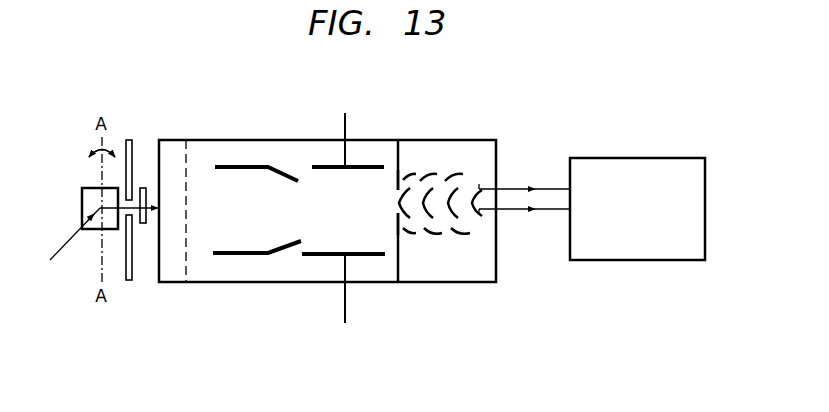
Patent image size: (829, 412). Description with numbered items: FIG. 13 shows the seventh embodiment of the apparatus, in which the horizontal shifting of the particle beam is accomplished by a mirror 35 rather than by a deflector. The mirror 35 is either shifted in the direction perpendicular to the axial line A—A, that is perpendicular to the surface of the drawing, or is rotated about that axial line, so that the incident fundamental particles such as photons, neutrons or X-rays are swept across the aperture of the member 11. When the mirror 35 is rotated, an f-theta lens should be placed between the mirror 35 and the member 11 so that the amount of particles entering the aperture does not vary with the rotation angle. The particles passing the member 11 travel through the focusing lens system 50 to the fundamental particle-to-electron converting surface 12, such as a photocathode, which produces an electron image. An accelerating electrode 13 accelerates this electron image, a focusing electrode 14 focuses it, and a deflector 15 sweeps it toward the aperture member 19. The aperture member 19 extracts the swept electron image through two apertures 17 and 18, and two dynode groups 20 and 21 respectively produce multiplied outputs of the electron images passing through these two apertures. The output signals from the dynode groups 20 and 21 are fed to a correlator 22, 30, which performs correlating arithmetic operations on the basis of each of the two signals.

The mirror 35 is at (82, 202).
The member 11 is at (128, 137).
The focusing lens system 50 is at (143, 186).
The fundamental particle-to-electron converting surface 12 is at (158, 272).
The accelerating electrode 13 is at (187, 264).
The focusing electrode 14 is at (244, 256).
The deflector 15 is at (316, 257).
The aperture 17 is at (398, 196).
The aperture 18 is at (398, 214).
The aperture member 19 is at (401, 162).
The dynode group 20 is at (453, 176).
The dynode group 21 is at (462, 234).
The correlator 22 is at (637, 184).
The correlator 30 is at (619, 157).